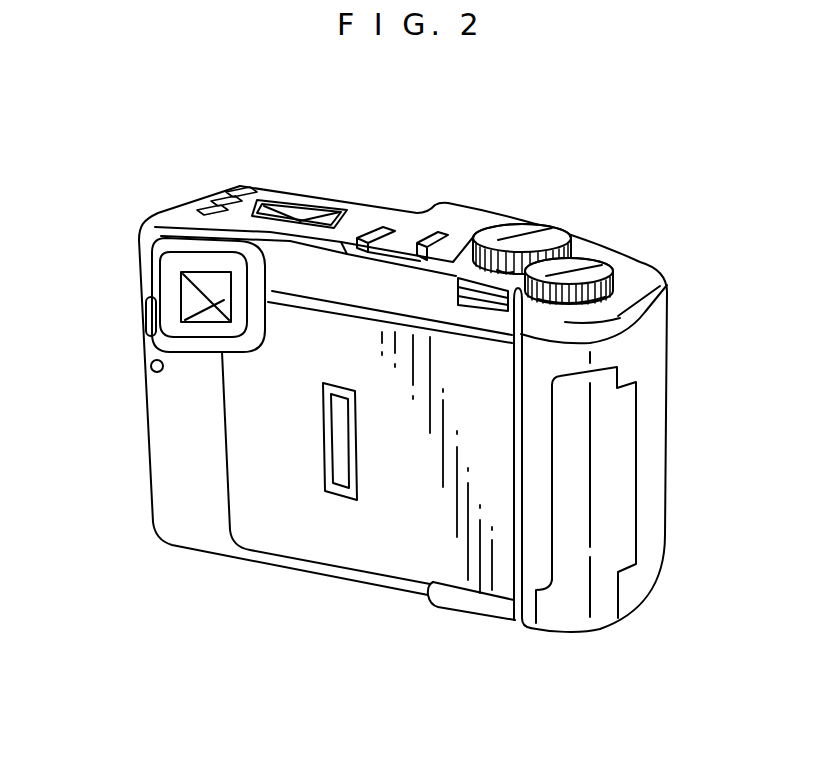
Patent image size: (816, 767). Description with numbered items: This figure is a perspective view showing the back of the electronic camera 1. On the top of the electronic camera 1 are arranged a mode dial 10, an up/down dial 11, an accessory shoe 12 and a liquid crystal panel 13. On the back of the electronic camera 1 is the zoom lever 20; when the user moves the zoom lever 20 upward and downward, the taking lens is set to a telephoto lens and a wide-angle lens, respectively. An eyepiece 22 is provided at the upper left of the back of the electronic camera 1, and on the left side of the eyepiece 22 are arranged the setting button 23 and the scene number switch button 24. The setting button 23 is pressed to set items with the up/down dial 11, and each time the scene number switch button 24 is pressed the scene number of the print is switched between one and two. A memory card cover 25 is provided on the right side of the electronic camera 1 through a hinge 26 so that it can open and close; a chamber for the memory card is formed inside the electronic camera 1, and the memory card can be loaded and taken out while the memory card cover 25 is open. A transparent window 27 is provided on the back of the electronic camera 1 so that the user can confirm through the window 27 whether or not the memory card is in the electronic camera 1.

The electronic camera 1 is at (452, 183).
The mode dial 10 is at (544, 233).
The up/down dial 11 is at (593, 265).
The accessory shoe 12 is at (380, 221).
The liquid crystal panel 13 is at (311, 207).
The zoom lever 20 is at (460, 282).
The eyepiece 22 is at (170, 279).
The setting button 23 is at (145, 314).
The scene number switch button 24 is at (150, 366).
The memory card cover 25 is at (570, 624).
The hinge 26 is at (630, 433).
The transparent window 27 is at (337, 458).